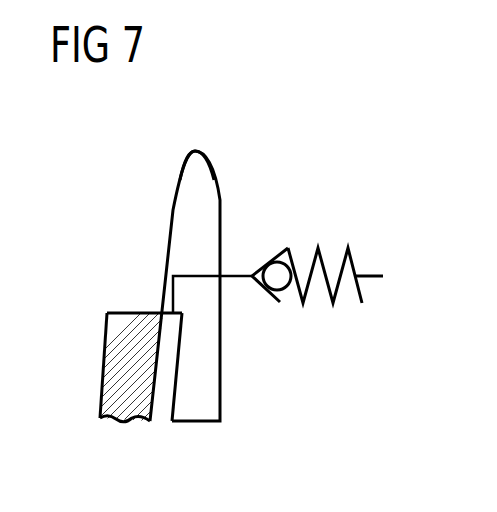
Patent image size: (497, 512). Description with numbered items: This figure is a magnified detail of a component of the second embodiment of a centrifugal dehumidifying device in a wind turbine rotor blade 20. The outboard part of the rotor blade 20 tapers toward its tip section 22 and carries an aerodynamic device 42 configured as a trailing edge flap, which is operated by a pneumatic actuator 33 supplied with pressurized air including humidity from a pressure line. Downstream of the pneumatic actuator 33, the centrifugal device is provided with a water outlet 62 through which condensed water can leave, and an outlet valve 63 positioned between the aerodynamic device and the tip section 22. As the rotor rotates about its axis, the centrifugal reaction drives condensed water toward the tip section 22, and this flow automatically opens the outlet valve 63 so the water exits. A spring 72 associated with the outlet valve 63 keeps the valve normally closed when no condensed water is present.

The rotor blade 20 is at (162, 248).
The tip section 22 is at (195, 150).
The pneumatic actuator 33 is at (162, 413).
The aerodynamic device 42 is at (112, 367).
The water outlet 62 is at (173, 295).
The outlet valve 63 is at (283, 251).
The spring 72 is at (353, 263).